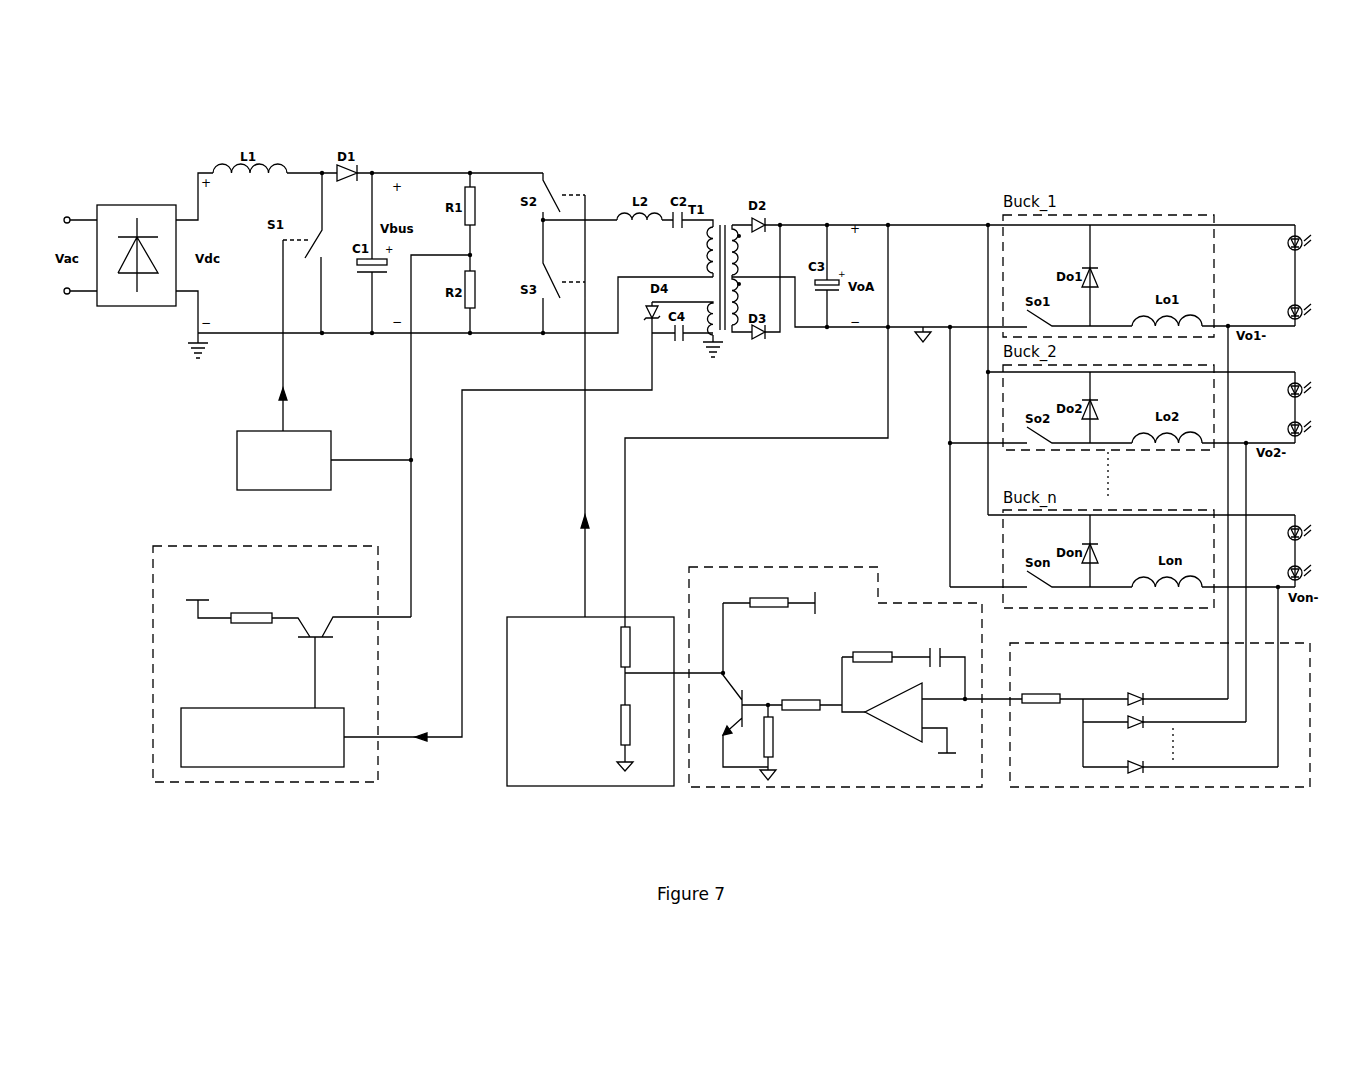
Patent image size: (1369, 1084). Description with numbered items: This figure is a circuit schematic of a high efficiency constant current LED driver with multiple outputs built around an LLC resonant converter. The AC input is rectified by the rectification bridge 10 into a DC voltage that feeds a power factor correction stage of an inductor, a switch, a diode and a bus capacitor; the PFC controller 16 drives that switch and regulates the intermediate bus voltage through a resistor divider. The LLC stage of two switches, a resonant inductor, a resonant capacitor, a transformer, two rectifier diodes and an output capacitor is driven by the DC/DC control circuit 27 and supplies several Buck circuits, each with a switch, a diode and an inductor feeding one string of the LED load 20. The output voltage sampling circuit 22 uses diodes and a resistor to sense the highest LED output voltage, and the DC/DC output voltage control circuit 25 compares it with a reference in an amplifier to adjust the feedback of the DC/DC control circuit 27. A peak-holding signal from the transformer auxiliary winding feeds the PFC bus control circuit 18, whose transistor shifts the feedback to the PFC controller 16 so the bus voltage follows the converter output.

The rectification bridge 10 is at (157, 205).
The PFC controller 16 is at (237, 458).
The PFC bus control circuit 18 is at (153, 546).
The LED load 20 is at (1318, 279).
The output voltage sampling circuit 22 is at (1158, 787).
The DC/DC output voltage control circuit 25 is at (878, 567).
The DC/DC control circuit 27 is at (592, 786).